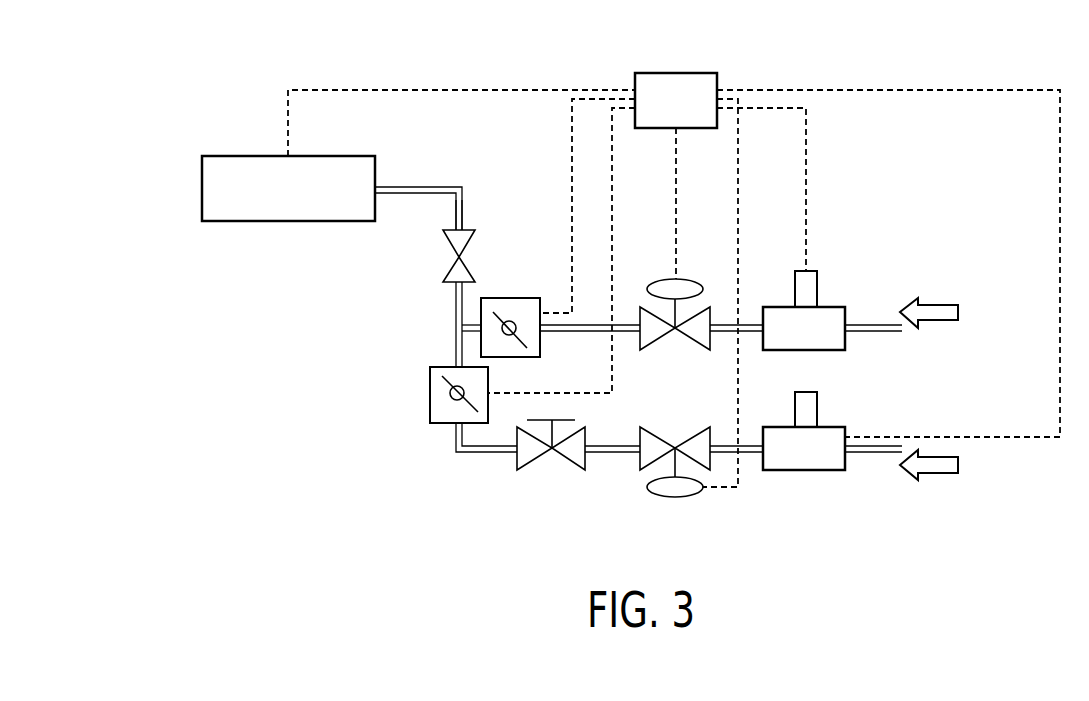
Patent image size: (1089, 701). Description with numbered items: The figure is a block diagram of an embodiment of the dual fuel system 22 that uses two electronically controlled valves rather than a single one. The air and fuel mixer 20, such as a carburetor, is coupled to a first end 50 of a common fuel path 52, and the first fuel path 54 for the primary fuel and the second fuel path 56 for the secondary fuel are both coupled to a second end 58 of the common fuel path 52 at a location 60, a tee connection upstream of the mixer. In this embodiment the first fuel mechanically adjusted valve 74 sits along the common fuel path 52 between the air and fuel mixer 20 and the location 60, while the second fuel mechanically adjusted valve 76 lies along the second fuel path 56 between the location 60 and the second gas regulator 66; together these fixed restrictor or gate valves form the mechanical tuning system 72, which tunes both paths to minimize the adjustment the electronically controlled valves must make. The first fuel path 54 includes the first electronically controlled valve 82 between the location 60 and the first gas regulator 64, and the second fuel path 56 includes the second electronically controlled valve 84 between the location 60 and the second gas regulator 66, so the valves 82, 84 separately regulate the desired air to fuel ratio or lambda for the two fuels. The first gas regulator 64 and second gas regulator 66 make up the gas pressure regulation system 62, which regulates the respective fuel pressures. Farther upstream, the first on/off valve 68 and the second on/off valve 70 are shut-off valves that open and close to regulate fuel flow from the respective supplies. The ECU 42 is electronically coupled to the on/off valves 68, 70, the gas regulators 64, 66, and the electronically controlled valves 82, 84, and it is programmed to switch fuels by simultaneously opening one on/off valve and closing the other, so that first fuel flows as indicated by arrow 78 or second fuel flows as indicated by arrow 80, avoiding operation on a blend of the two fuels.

The air and fuel mixer 20 is at (202, 192).
The dual fuel system 22 is at (432, 72).
The ECU 42 is at (676, 73).
The first end 50 is at (378, 187).
The common fuel path 52 is at (463, 209).
The first fuel path 54 is at (553, 333).
The second fuel path 56 is at (488, 453).
The second end 58 is at (456, 330).
The location 60 is at (471, 328).
The gas pressure regulation system 62 is at (692, 376).
The first gas regulator 64 is at (658, 340).
The second gas regulator 66 is at (676, 427).
The first on/off valve 68 is at (803, 350).
The second on/off valve 70 is at (805, 470).
The mechanical tuning system 72 is at (505, 213).
The first fuel mechanically adjusted valve 74 is at (468, 243).
The second fuel mechanically adjusted valve 76 is at (568, 463).
The arrow 78 is at (935, 322).
The arrow 80 is at (937, 457).
The first electronically controlled valve 82 is at (510, 298).
The second electronically controlled valve 84 is at (430, 393).